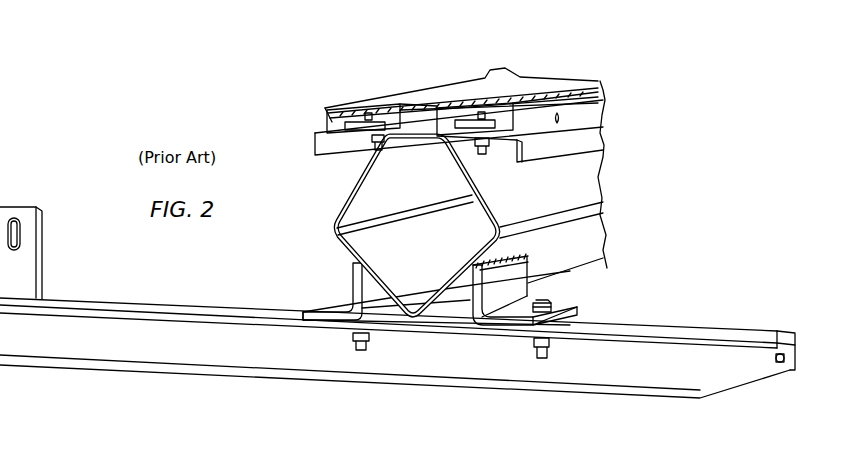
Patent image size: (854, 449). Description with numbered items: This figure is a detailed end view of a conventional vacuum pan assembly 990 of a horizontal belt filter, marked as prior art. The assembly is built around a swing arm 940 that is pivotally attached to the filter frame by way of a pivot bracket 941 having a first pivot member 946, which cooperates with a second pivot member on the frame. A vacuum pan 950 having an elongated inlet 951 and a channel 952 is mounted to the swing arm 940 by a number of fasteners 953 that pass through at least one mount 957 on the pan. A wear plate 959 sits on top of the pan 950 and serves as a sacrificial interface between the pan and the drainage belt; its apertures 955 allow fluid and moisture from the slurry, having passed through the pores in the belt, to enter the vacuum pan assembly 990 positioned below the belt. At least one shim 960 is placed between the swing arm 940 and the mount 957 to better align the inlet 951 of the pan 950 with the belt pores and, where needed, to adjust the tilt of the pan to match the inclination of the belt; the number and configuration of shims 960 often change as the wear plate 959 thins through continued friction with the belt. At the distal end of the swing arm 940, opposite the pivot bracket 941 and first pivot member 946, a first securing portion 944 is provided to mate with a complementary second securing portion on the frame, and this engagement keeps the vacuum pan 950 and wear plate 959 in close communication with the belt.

The conventional vacuum pan assembly 990 is at (156, 70).
The swing arm 940 is at (207, 356).
The pivot bracket 941 is at (27, 198).
The first securing portion 944 is at (777, 358).
The first pivot member 946 is at (24, 236).
The vacuum pan 950 is at (586, 184).
The elongated inlet 951 is at (408, 110).
The channel 952 is at (398, 190).
The fasteners 953 is at (358, 352).
The apertures 955 is at (455, 98).
The mount 957 is at (333, 307).
The wear plate 959 is at (338, 118).
The shim 960 is at (580, 328).